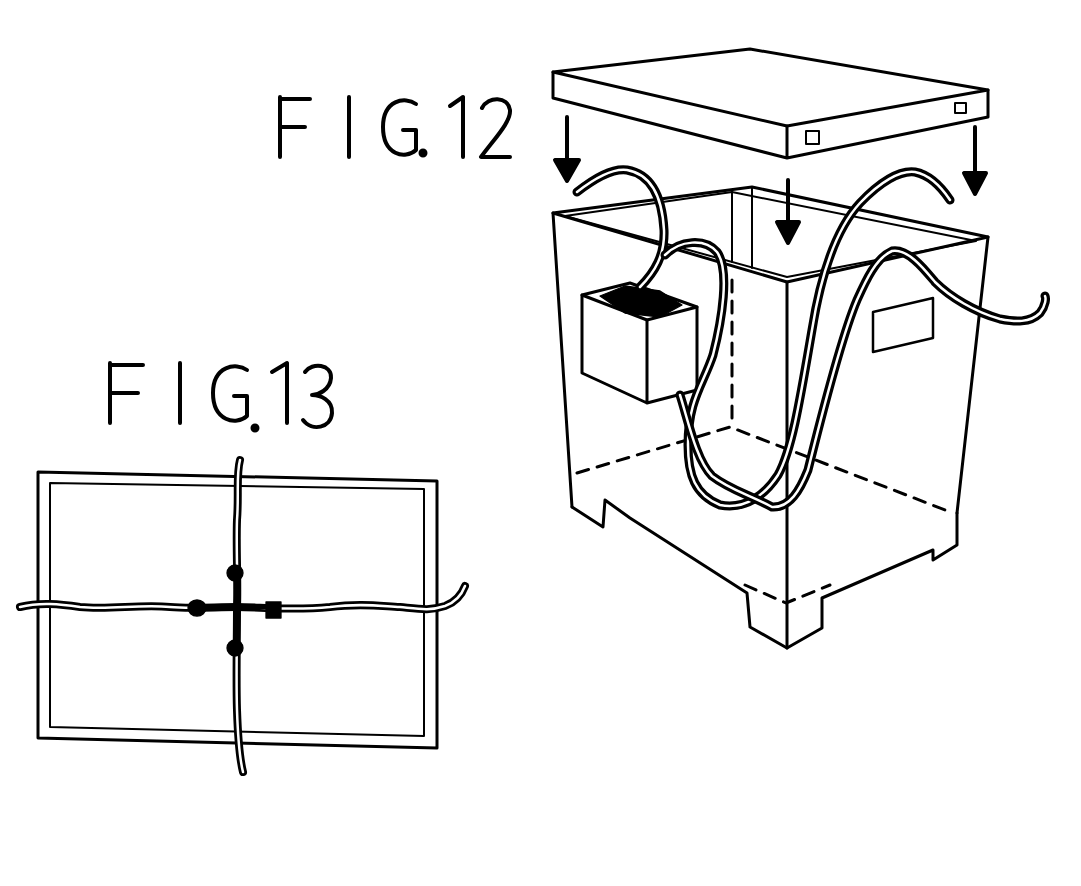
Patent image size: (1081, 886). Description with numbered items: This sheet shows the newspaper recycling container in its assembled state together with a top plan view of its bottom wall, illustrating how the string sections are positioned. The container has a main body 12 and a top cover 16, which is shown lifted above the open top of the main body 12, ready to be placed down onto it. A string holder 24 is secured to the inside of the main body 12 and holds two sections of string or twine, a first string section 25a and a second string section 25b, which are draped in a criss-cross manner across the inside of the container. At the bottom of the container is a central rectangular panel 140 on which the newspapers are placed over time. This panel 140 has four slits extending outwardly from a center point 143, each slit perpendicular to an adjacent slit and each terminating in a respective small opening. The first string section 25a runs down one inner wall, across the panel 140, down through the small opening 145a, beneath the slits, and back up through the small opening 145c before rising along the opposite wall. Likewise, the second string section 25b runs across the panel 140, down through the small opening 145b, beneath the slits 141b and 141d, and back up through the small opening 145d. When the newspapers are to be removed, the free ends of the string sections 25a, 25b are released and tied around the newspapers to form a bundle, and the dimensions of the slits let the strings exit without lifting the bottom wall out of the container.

In FIG. 12, the main body 12 is at (972, 426).
In FIG. 12, the top cover 16 is at (908, 60).
In FIG. 12, the string holder 24 is at (602, 355).
In FIG. 12, the string section 25a is at (956, 203).
In FIG. 13, the string section 25a is at (232, 775).
In FIG. 12, the string section 25b is at (1020, 298).
In FIG. 13, the string section 25b is at (453, 590).
In FIG. 13, the central rectangular panel 140 is at (333, 559).
In FIG. 13, the slit 141b is at (220, 617).
In FIG. 13, the slit 141d is at (253, 605).
In FIG. 13, the center point 143 is at (232, 605).
In FIG. 13, the small opening 145a is at (243, 652).
In FIG. 13, the small opening 145b is at (194, 617).
In FIG. 13, the small opening 145c is at (228, 572).
In FIG. 13, the small opening 145d is at (277, 618).